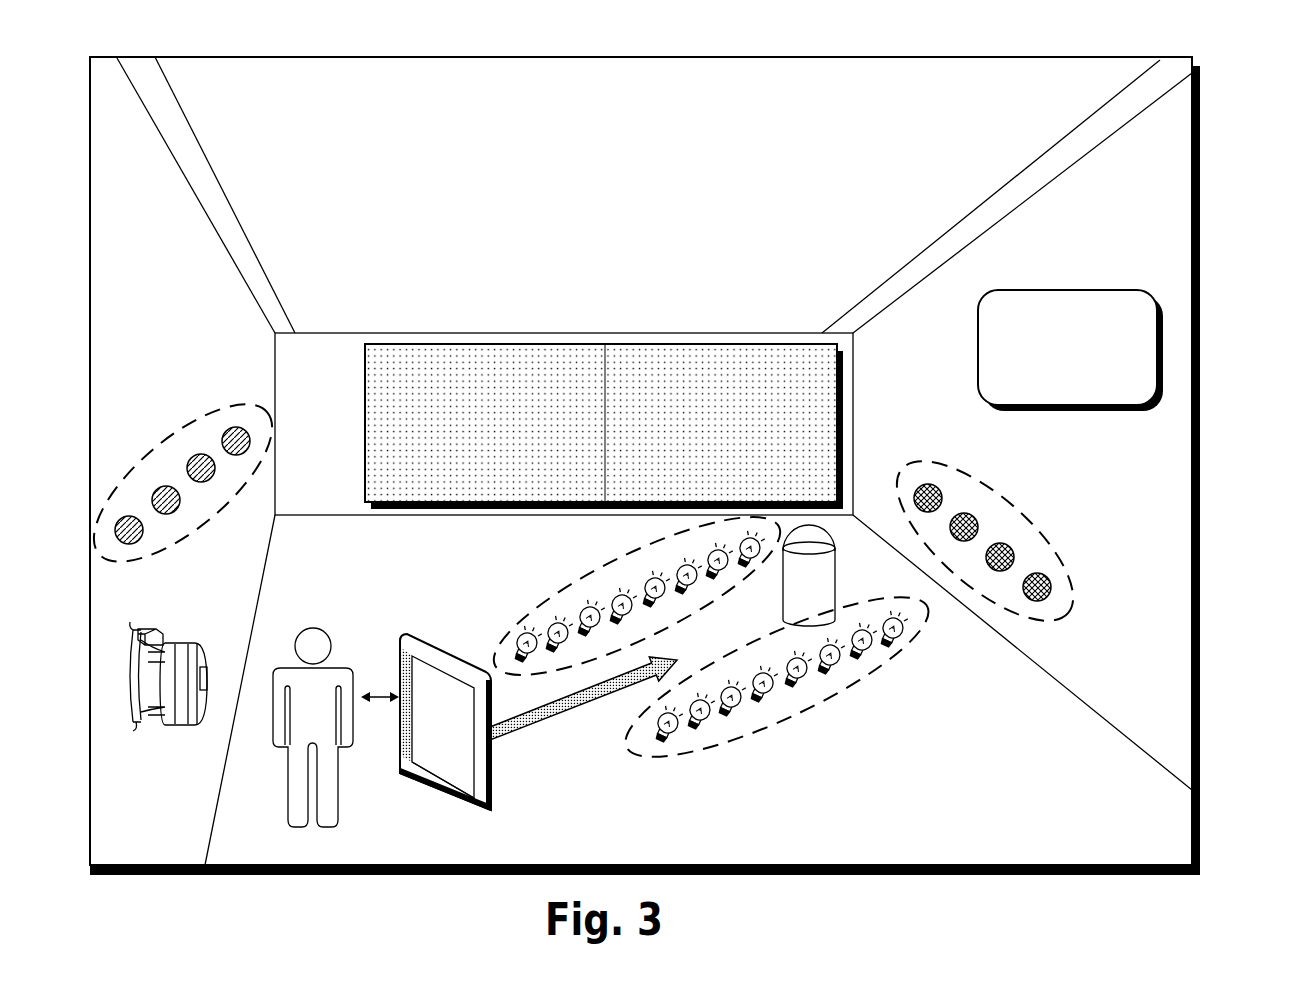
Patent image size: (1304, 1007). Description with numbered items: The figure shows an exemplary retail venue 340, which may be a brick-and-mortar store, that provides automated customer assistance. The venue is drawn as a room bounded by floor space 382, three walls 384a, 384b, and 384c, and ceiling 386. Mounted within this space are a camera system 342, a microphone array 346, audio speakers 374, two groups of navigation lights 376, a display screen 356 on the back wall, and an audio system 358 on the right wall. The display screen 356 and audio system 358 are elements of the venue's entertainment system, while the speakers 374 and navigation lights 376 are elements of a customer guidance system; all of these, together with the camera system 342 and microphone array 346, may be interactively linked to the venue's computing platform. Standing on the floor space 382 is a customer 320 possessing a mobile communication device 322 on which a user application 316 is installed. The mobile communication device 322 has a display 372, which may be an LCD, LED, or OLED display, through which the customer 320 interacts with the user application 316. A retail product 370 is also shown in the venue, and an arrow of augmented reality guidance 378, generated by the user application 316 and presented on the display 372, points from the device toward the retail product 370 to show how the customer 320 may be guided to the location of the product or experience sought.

The retail venue 340 is at (1230, 125).
The ceiling 386 is at (357, 152).
The wall 384a is at (110, 362).
The wall 384b is at (295, 441).
The wall 384c is at (900, 407).
The floor space 382 is at (1010, 799).
The display screen 356 is at (690, 432).
The audio system 358 is at (1048, 374).
The microphone array 346 is at (150, 460).
The audio speakers 374 is at (1020, 515).
The camera system 342 is at (199, 640).
The customer 320 is at (338, 638).
The user application 316 is at (420, 737).
The mobile communication device 322 is at (427, 800).
The display 372 is at (438, 697).
The AR guidance 378 is at (565, 718).
The retail product 370 is at (836, 572).
The navigation lights 376 is at (558, 594).